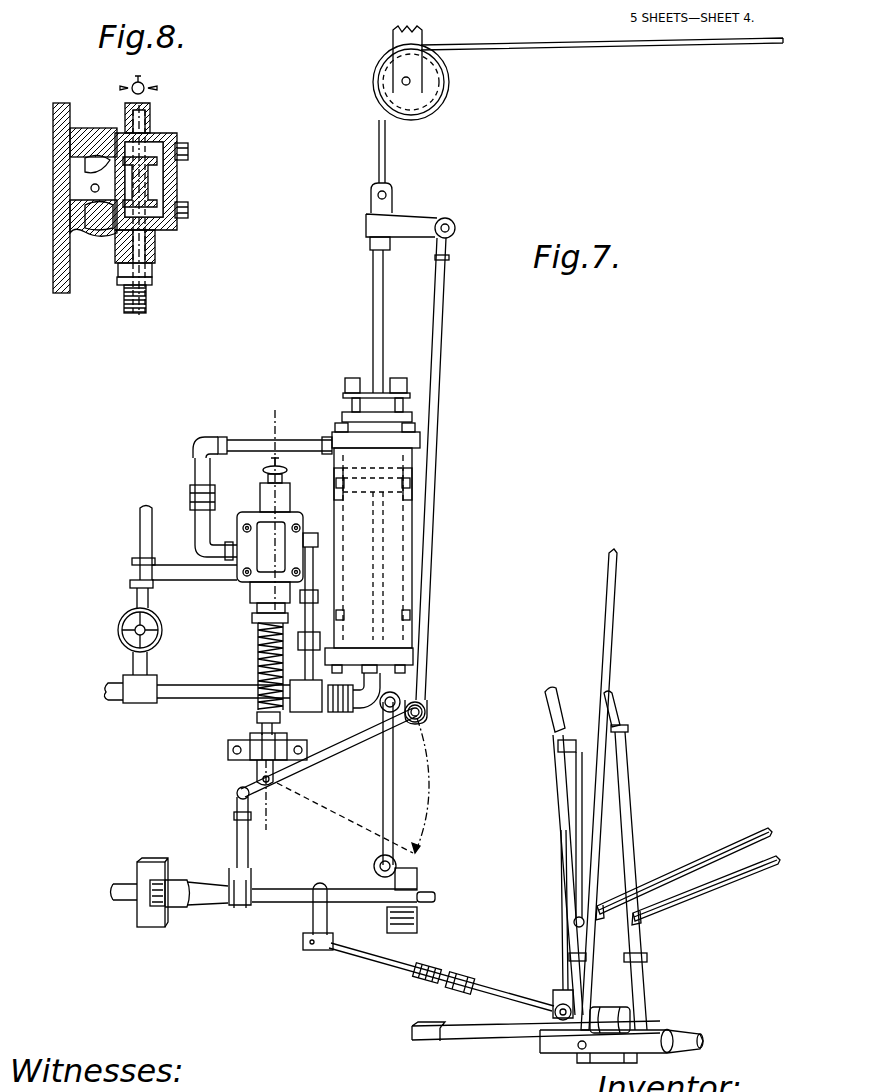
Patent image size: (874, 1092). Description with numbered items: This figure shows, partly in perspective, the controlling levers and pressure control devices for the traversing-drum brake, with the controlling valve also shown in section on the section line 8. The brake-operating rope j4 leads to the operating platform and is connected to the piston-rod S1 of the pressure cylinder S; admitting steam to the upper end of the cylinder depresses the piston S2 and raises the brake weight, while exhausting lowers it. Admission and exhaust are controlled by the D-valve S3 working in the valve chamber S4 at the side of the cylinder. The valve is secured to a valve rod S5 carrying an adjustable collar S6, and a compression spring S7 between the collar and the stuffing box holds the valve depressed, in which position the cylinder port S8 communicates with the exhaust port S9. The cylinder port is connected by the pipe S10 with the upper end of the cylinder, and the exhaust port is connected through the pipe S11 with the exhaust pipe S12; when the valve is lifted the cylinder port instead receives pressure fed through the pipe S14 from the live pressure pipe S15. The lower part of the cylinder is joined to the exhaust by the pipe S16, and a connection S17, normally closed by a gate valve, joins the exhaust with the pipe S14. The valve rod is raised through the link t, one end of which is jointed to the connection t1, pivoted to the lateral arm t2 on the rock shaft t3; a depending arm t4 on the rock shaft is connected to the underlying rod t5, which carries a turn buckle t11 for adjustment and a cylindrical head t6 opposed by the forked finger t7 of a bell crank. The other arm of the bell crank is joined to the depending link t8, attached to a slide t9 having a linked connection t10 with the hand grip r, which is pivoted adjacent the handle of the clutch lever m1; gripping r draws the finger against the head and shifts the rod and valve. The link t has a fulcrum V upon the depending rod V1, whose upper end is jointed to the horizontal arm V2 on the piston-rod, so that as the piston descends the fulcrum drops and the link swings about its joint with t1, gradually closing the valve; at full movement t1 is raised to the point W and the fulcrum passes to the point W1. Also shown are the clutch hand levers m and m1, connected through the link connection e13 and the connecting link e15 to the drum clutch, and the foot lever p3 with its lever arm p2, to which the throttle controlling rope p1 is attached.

In FIG. 8, the exhaust port S9 is at (100, 167).
In FIG. 8, the cylinder port S8 is at (72, 200).
In FIG. 8, the live pressure pipe S15 is at (70, 230).
In FIG. 7, the live pressure pipe S15 is at (140, 525).
In FIG. 8, the valve chamber S4 is at (160, 173).
In FIG. 8, the D-valve S3 is at (152, 190).
In FIG. 7, the D-valve S3 is at (263, 673).
In FIG. 8, the valve rod S5 is at (143, 260).
In FIG. 8, the compression spring S7 is at (143, 290).
In FIG. 7, the compression spring S7 is at (256, 674).
In FIG. 7, the brake-operating rope j4 is at (560, 48).
In FIG. 7, the horizontal arm V2 is at (415, 222).
In FIG. 7, the piston-rod S1 is at (378, 332).
In FIG. 7, the depending rod V1 is at (427, 568).
In FIG. 7, the fulcrum V is at (423, 717).
In FIG. 7, the pressure cylinder S is at (400, 545).
In FIG. 7, the piston S2 is at (410, 492).
In FIG. 7, the pipe S10 is at (233, 445).
In FIG. 7, the pipe S14 is at (168, 573).
In FIG. 7, the section line 8 is at (282, 620).
In FIG. 7, the connection S17 is at (145, 662).
In FIG. 7, the exhaust pipe S12 is at (110, 700).
In FIG. 7, the pipe S11 is at (313, 612).
In FIG. 7, the pipe S16 is at (377, 688).
In FIG. 7, the adjustable collar S6 is at (280, 717).
In FIG. 7, the point W is at (240, 770).
In FIG. 7, the link t is at (327, 753).
In FIG. 7, the connection t1 is at (237, 832).
In FIG. 7, the rock shaft t3 is at (267, 897).
In FIG. 7, the lateral arm t2 is at (203, 893).
In FIG. 7, the depending arm t4 is at (327, 923).
In FIG. 7, the rod t5 is at (487, 982).
In FIG. 7, the turn buckle t11 is at (442, 967).
In FIG. 7, the forked finger t7 is at (503, 1007).
In FIG. 7, the cylindrical head t6 is at (557, 1015).
In FIG. 7, the point W1 is at (410, 850).
In FIG. 7, the throttle controlling rope p1 is at (608, 677).
In FIG. 7, the hand grip r is at (540, 710).
In FIG. 7, the linked connection t10 is at (557, 770).
In FIG. 7, the hand lever m1 is at (570, 747).
In FIG. 7, the slide t9 is at (582, 867).
In FIG. 7, the depending link t8 is at (562, 897).
In FIG. 7, the hand lever m is at (637, 860).
In FIG. 7, the connecting link e15 is at (723, 850).
In FIG. 7, the link connection e13 is at (707, 890).
In FIG. 7, the foot lever p3 is at (423, 1033).
In FIG. 7, the lever arm p2 is at (633, 1043).